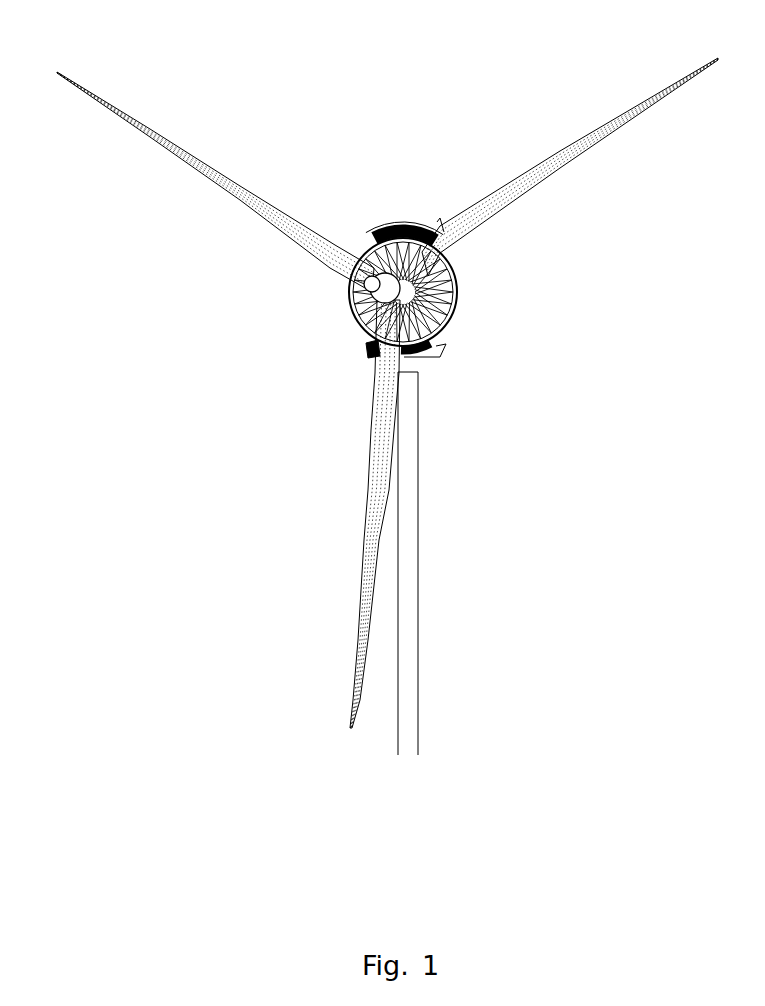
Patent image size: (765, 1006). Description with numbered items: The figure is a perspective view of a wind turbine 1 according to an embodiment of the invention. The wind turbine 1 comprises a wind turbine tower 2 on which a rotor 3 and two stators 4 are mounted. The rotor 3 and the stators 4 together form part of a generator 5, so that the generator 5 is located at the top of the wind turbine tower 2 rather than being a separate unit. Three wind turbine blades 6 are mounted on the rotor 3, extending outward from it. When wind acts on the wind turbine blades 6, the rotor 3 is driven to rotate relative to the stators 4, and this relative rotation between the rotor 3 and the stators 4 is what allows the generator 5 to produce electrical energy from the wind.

The wind turbine 1 is at (115, 476).
The wind turbine tower 2 is at (408, 525).
The rotor 3 is at (443, 323).
The stators 4 is at (405, 222).
The generator 5 is at (490, 270).
The wind turbine blades 6 is at (135, 122).